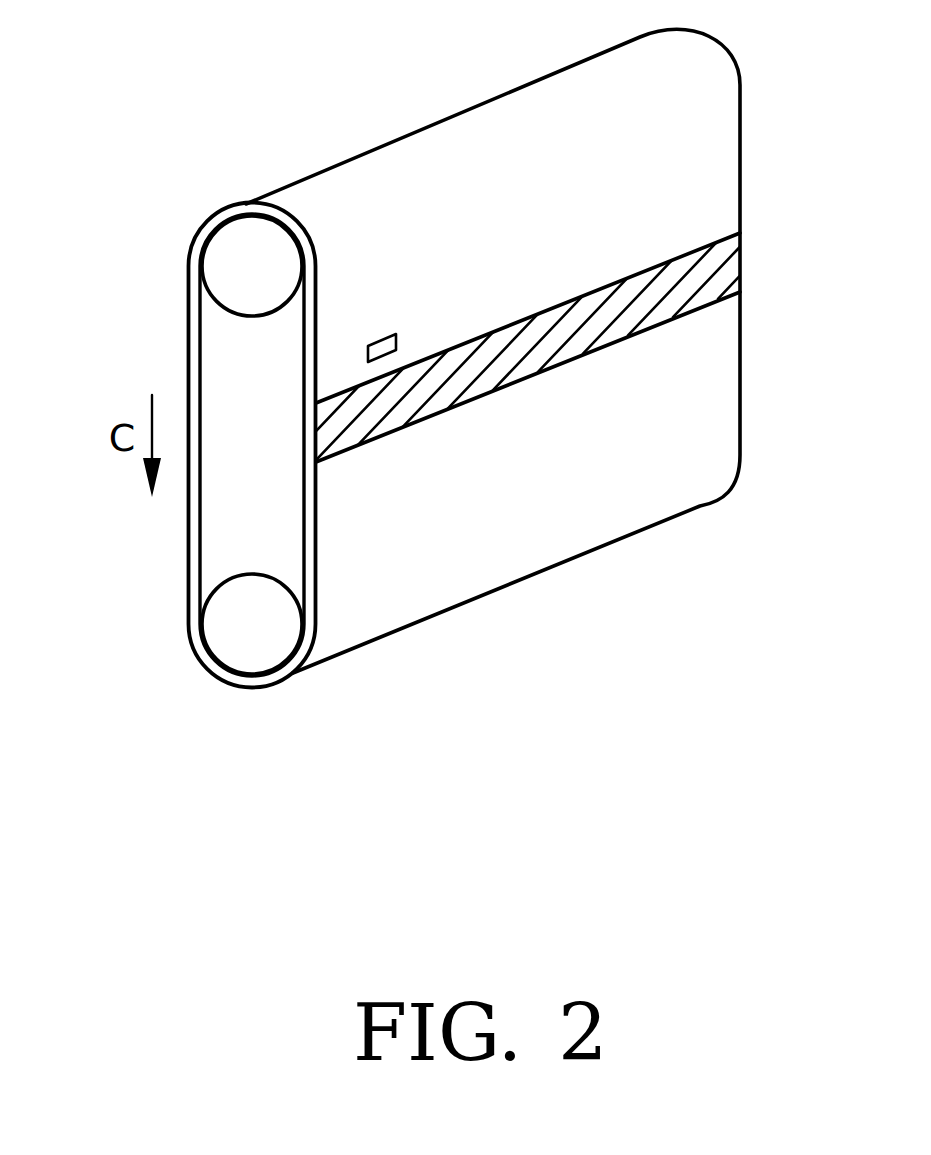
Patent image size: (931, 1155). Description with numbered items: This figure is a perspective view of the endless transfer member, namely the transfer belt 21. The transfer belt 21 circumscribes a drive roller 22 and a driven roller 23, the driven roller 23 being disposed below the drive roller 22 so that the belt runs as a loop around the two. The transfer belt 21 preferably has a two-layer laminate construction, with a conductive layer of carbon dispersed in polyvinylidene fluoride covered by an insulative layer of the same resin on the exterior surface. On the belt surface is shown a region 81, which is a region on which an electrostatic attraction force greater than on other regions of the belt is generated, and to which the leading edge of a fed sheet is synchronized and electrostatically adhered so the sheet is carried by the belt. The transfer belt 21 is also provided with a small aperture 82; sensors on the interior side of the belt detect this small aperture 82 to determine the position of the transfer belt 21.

The transfer belt 21 is at (188, 313).
The drive roller 22 is at (242, 252).
The driven roller 23 is at (240, 640).
The region 81 is at (707, 263).
The small aperture 82 is at (380, 345).